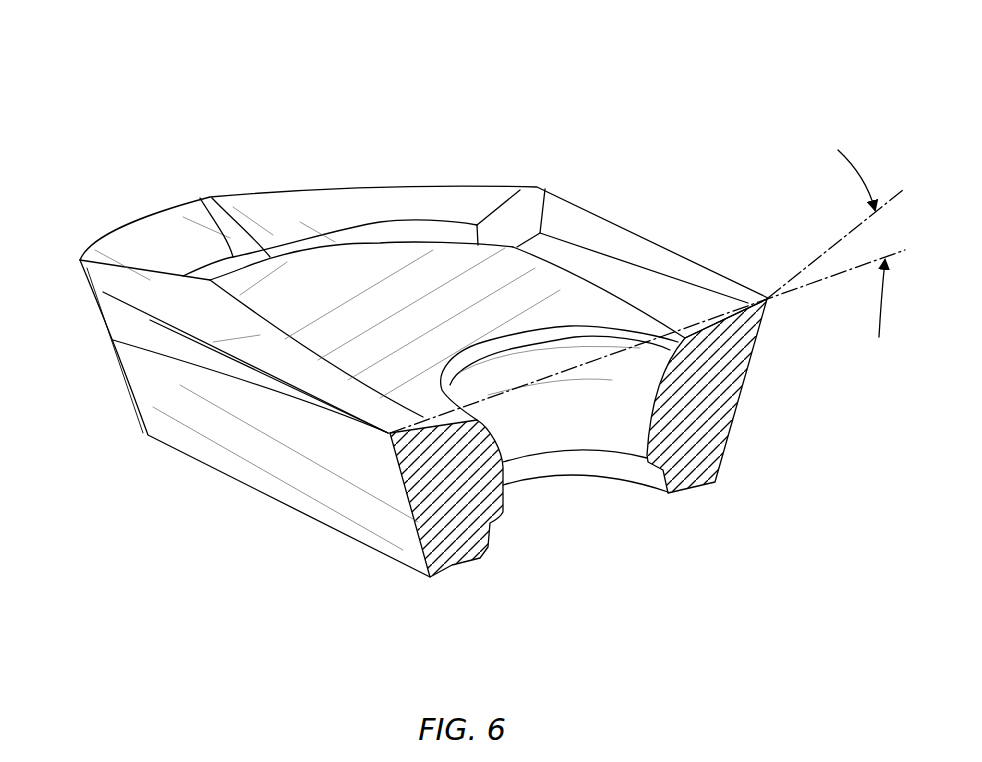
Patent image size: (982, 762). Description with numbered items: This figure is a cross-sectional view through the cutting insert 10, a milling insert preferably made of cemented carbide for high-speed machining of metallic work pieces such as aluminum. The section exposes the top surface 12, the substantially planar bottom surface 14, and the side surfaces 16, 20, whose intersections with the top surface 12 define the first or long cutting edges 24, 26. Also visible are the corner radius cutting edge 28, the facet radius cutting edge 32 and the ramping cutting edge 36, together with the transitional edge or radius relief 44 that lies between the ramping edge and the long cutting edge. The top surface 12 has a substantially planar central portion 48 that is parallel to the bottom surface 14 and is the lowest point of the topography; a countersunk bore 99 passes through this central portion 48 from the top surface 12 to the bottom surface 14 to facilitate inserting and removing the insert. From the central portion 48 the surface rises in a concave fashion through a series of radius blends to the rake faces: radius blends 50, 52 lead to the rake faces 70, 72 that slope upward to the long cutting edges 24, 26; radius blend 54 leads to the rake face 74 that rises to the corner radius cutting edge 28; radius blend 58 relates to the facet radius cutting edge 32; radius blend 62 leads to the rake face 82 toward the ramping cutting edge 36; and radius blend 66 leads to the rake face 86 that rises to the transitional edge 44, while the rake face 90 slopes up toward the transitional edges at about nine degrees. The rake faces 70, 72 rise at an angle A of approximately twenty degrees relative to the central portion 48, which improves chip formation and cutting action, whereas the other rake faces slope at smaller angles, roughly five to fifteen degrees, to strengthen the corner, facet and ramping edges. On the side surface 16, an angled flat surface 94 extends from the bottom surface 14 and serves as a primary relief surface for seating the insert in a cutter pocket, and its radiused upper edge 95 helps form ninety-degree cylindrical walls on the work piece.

The cutting insert 10 is at (108, 107).
The top surface 12 is at (371, 268).
The bottom surface 14 is at (697, 500).
The side surface 16 is at (280, 452).
The side surface 20 is at (779, 269).
The long cutting edge 24 is at (357, 418).
The long cutting edge 26 is at (710, 270).
The corner radius cutting edge 28 is at (80, 260).
The facet radius cutting edge 32 is at (145, 235).
The ramping cutting edge 36 is at (303, 243).
The transitional edge 44 is at (544, 188).
The central portion 48 is at (560, 287).
The radius blend 50 is at (290, 358).
The radius blend 52 is at (660, 290).
The radius blend 54 is at (188, 270).
The radius blend 58 is at (208, 278).
The radius blend 62 is at (282, 235).
The radius blend 66 is at (493, 237).
The rake face 70 is at (153, 303).
The rake face 72 is at (598, 230).
The rake face 74 is at (148, 270).
The rake face 82 is at (317, 207).
The rake face 86 is at (527, 207).
The rake face 90 is at (210, 197).
The angled flat surface 94 is at (220, 425).
The radiused upper edge 95 is at (160, 350).
The countersunk bore 99 is at (637, 380).
The angle A is at (879, 337).